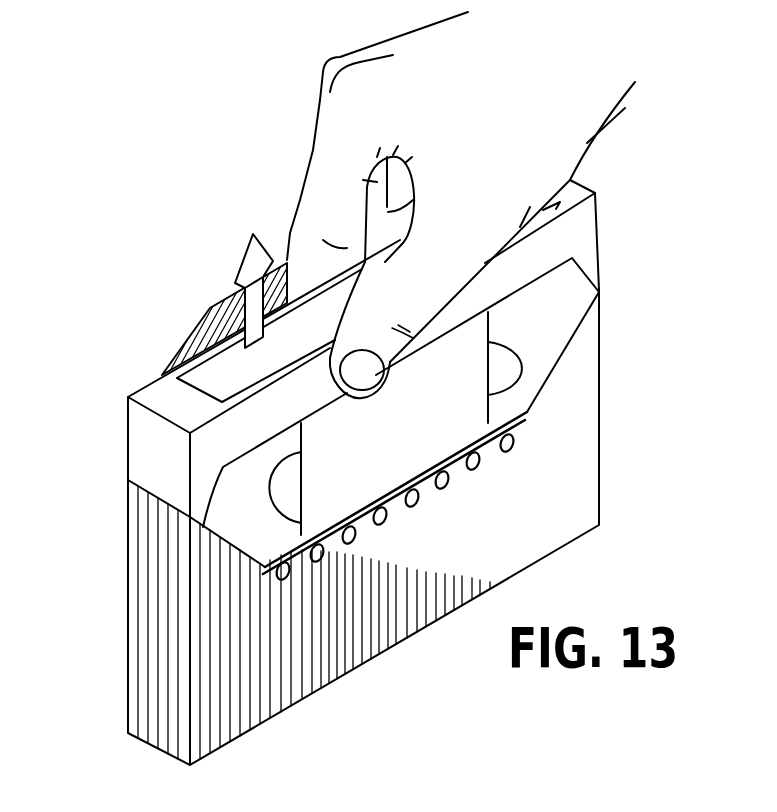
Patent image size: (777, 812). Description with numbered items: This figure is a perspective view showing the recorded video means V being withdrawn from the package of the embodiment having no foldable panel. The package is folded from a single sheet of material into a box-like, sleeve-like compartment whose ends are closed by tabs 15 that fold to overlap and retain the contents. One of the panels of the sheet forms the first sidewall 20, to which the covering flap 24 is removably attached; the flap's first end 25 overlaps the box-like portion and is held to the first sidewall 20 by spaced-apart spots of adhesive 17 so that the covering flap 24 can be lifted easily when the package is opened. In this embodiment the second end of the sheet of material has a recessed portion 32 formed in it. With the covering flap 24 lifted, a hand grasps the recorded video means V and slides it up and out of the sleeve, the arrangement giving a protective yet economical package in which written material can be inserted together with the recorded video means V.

The recorded video means V is at (150, 392).
The tabs 15 is at (155, 560).
The spots of adhesive 17 is at (320, 562).
The first sidewall 20 is at (562, 403).
The covering flap 24 is at (210, 307).
The first end of the covering flap 25 is at (228, 293).
The recessed portion 32 is at (566, 345).